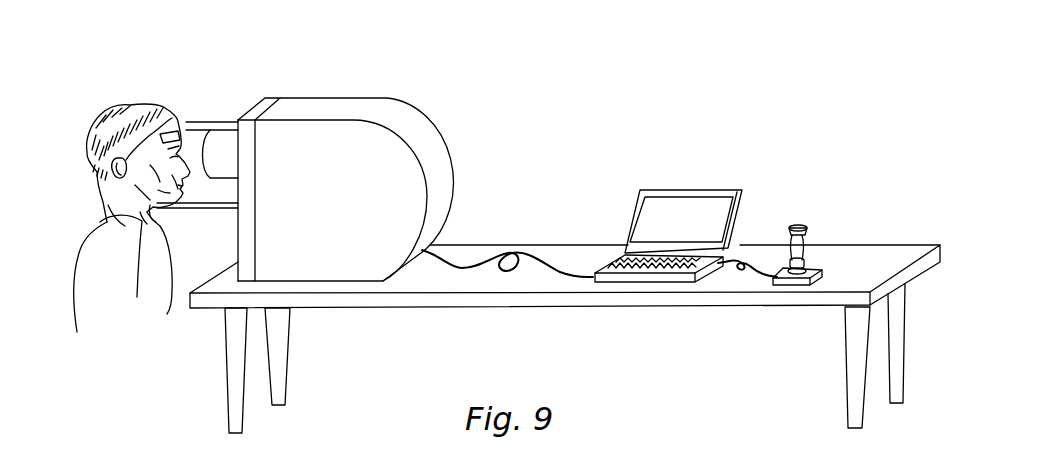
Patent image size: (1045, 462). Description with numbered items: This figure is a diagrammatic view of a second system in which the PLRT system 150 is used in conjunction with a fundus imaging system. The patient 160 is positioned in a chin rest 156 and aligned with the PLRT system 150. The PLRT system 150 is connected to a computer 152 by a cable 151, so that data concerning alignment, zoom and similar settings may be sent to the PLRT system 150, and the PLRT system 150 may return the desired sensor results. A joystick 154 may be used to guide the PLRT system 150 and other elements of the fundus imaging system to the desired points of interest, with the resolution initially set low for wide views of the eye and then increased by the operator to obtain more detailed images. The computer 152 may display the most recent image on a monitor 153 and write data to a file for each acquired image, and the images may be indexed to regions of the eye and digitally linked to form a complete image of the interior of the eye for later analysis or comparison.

The PLRT system 150 is at (402, 120).
The cable 151 is at (543, 260).
The computer 152 is at (740, 215).
The monitor 153 is at (682, 203).
The joystick 154 is at (813, 267).
The chin rest 156 is at (186, 122).
The patient 160 is at (100, 112).